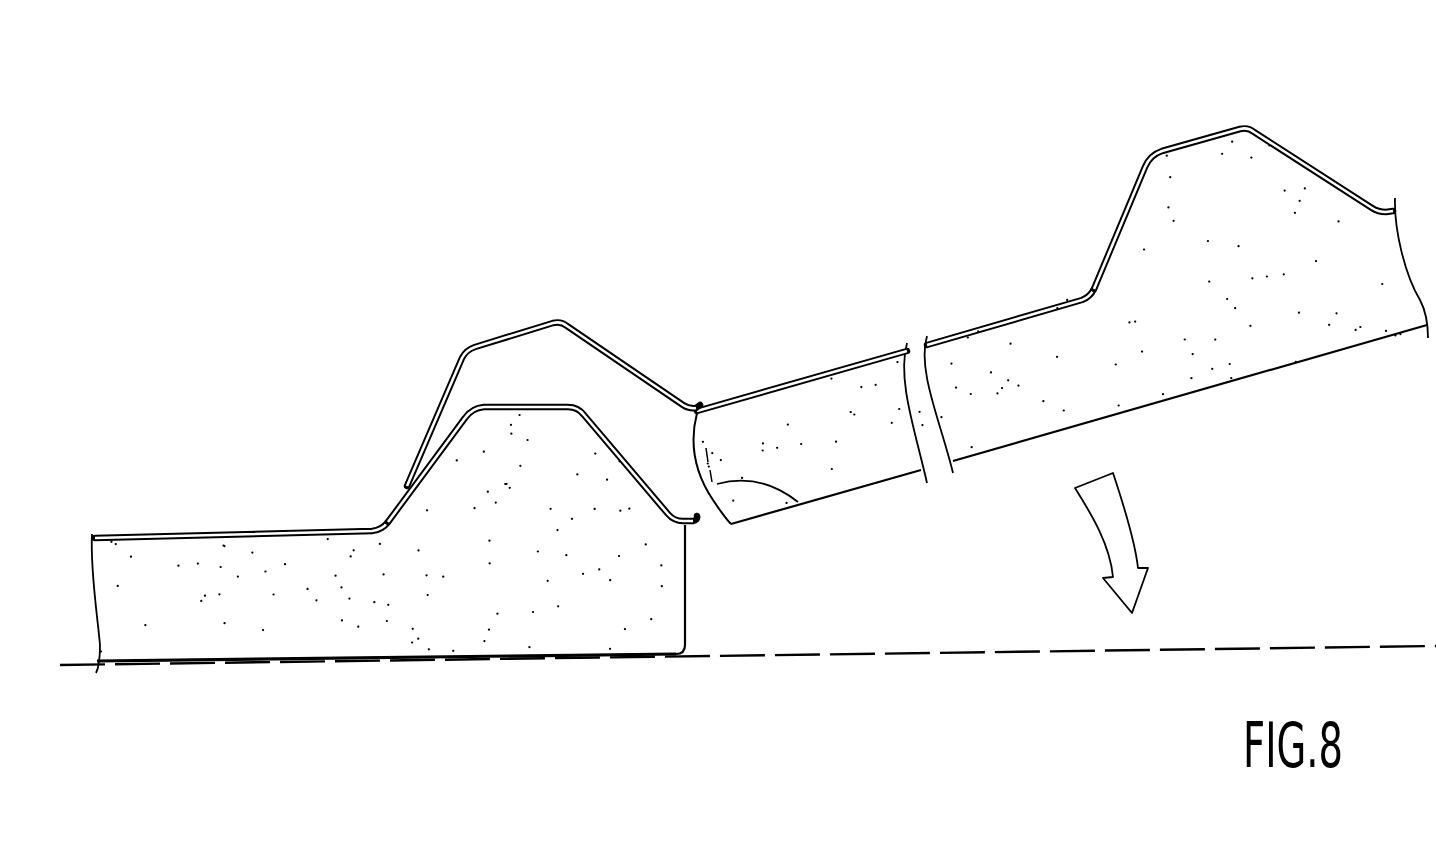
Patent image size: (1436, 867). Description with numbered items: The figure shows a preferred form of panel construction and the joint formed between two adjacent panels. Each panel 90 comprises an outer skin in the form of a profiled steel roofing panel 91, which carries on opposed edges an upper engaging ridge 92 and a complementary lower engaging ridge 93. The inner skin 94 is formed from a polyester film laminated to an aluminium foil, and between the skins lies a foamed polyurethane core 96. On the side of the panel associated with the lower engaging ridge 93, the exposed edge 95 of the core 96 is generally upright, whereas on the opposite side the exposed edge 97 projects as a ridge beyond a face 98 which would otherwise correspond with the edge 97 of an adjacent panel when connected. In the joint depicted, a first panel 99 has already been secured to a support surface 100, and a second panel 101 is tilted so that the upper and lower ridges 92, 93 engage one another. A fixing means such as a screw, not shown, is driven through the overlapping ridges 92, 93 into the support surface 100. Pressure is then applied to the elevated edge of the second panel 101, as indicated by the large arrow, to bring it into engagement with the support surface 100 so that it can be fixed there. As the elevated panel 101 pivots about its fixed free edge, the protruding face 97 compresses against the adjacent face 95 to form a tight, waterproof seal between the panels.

The panel 90 is at (748, 397).
The profiled steel roofing panel 91 is at (183, 530).
The upper engaging ridge 92 is at (507, 332).
The lower engaging ridge 93 is at (452, 445).
The inner skin 94 is at (362, 662).
The exposed edge 95 is at (687, 617).
The foamed polyurethane core 96 is at (526, 587).
The exposed edge 97 is at (708, 521).
The face 98 is at (798, 502).
The first panel 99 is at (252, 642).
The support surface 100 is at (1033, 651).
The second panel 101 is at (1195, 138).